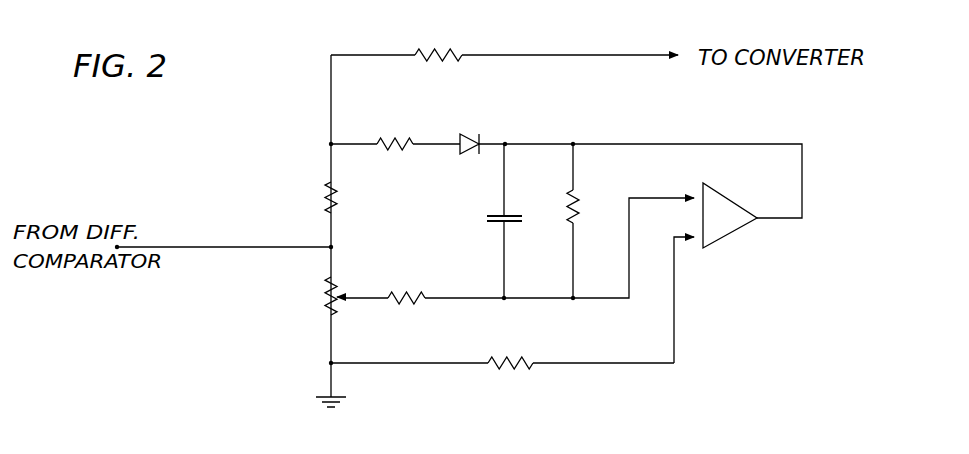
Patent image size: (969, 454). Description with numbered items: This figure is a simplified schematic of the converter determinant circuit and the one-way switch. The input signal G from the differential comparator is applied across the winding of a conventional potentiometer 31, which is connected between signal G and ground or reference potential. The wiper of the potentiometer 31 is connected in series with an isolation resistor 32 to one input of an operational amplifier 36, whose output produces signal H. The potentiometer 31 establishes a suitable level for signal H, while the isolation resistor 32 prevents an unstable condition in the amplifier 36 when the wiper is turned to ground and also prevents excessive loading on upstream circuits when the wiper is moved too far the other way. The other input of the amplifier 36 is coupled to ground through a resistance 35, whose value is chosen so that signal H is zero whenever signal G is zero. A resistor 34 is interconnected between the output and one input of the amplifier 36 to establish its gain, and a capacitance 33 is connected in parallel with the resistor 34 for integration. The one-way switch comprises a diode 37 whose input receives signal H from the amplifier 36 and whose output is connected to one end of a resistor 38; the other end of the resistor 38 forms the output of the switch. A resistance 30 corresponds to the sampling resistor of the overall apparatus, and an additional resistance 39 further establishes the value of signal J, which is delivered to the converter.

The resistance 30 is at (339, 207).
The potentiometer 31 is at (322, 311).
The isolation resistor 32 is at (411, 290).
The capacitance 33 is at (496, 222).
The resistor 34 is at (568, 225).
The resistance 35 is at (522, 372).
The operational amplifier 36 is at (736, 232).
The diode 37 is at (470, 131).
The resistor 38 is at (397, 136).
The resistance 39 is at (437, 48).
The signal G is at (268, 246).
The signal H is at (492, 142).
The signal J is at (562, 52).